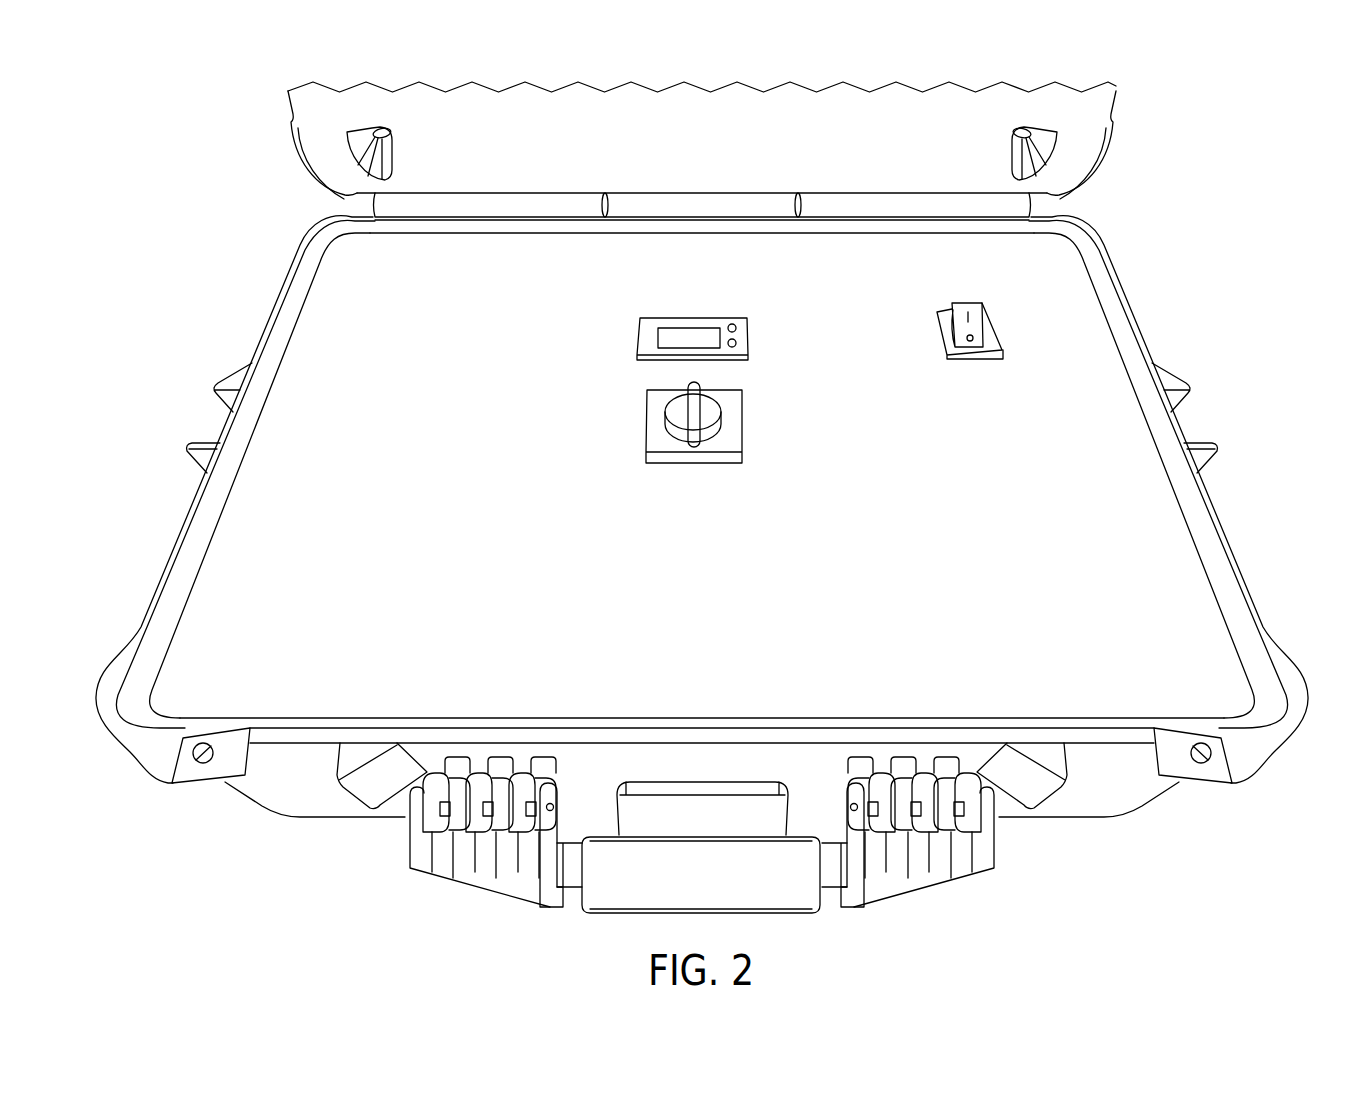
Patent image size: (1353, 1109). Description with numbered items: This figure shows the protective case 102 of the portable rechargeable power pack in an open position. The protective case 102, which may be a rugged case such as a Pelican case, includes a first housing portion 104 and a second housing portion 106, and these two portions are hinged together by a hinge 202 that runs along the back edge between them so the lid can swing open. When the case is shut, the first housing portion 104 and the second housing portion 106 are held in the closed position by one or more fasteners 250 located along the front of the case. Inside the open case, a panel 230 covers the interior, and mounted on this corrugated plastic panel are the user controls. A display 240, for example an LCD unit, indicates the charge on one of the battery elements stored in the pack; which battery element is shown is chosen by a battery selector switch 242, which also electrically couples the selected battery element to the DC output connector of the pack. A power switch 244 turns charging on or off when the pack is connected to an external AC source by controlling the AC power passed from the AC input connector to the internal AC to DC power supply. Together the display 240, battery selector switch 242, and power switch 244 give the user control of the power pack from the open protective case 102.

The protective case 102 is at (176, 150).
The first housing portion 104 is at (292, 112).
The second housing portion 106 is at (277, 306).
The hinge 202 is at (885, 205).
The panel 230 is at (1085, 348).
The display 240 is at (690, 321).
The battery selector switch 242 is at (647, 418).
The power switch 244 is at (940, 343).
The fasteners 250 is at (1044, 805).